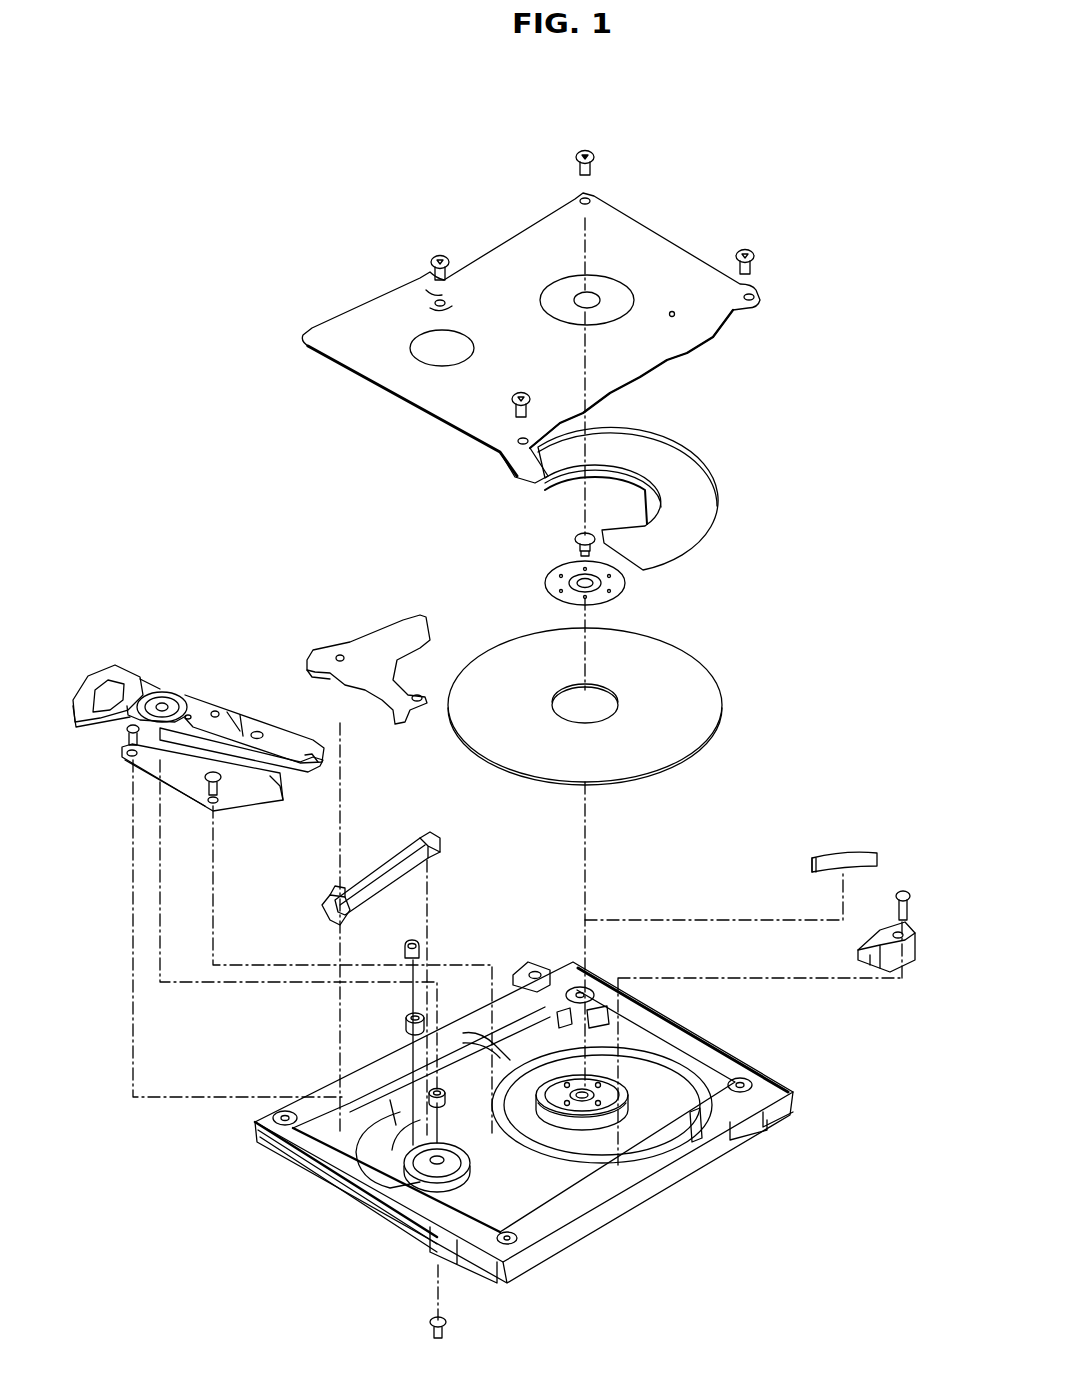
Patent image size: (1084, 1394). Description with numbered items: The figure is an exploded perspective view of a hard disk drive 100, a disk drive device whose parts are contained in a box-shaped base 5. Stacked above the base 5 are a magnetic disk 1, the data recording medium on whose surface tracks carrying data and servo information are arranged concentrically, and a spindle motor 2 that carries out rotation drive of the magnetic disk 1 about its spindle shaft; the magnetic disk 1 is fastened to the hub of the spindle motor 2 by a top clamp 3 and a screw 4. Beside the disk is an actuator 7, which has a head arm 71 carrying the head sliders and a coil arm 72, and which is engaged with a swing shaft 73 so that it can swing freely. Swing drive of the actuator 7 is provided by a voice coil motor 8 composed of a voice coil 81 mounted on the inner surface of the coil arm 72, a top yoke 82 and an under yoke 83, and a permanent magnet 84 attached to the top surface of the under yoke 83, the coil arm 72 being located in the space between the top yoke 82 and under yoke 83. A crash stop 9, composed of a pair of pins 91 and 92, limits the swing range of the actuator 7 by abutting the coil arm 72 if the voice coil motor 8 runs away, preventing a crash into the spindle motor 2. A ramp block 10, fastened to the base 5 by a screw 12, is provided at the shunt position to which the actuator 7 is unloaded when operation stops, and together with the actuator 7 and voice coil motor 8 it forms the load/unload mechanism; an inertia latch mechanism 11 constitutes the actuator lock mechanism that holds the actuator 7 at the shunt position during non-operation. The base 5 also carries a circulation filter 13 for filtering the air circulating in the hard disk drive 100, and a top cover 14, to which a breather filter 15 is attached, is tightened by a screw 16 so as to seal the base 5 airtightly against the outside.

The hard disk drive 100 is at (330, 218).
The magnetic disk 1 is at (710, 716).
The spindle motor 2 is at (585, 1112).
The top clamp 3 is at (620, 590).
The screw 4 is at (575, 540).
The base 5 is at (704, 1176).
The actuator 7 is at (208, 688).
The voice coil motor 8 is at (140, 652).
The crash stop 9 is at (477, 900).
The ramp block 10 is at (906, 964).
The inertia latch mechanism 11 is at (399, 818).
The screw 12 is at (903, 890).
The circulation filter 13 is at (842, 850).
The top cover 14 is at (378, 294).
The breather filter 15 is at (712, 476).
The screw 16 is at (598, 157).
The head arm 71 is at (280, 727).
The coil arm 72 is at (86, 734).
The swing shaft 73 is at (432, 1320).
The voice coil 81 is at (96, 682).
The top yoke 82 is at (395, 640).
The under yoke 83 is at (346, 1151).
The permanent magnet 84 is at (388, 1172).
The pin 91 is at (420, 946).
The pin 92 is at (426, 1012).